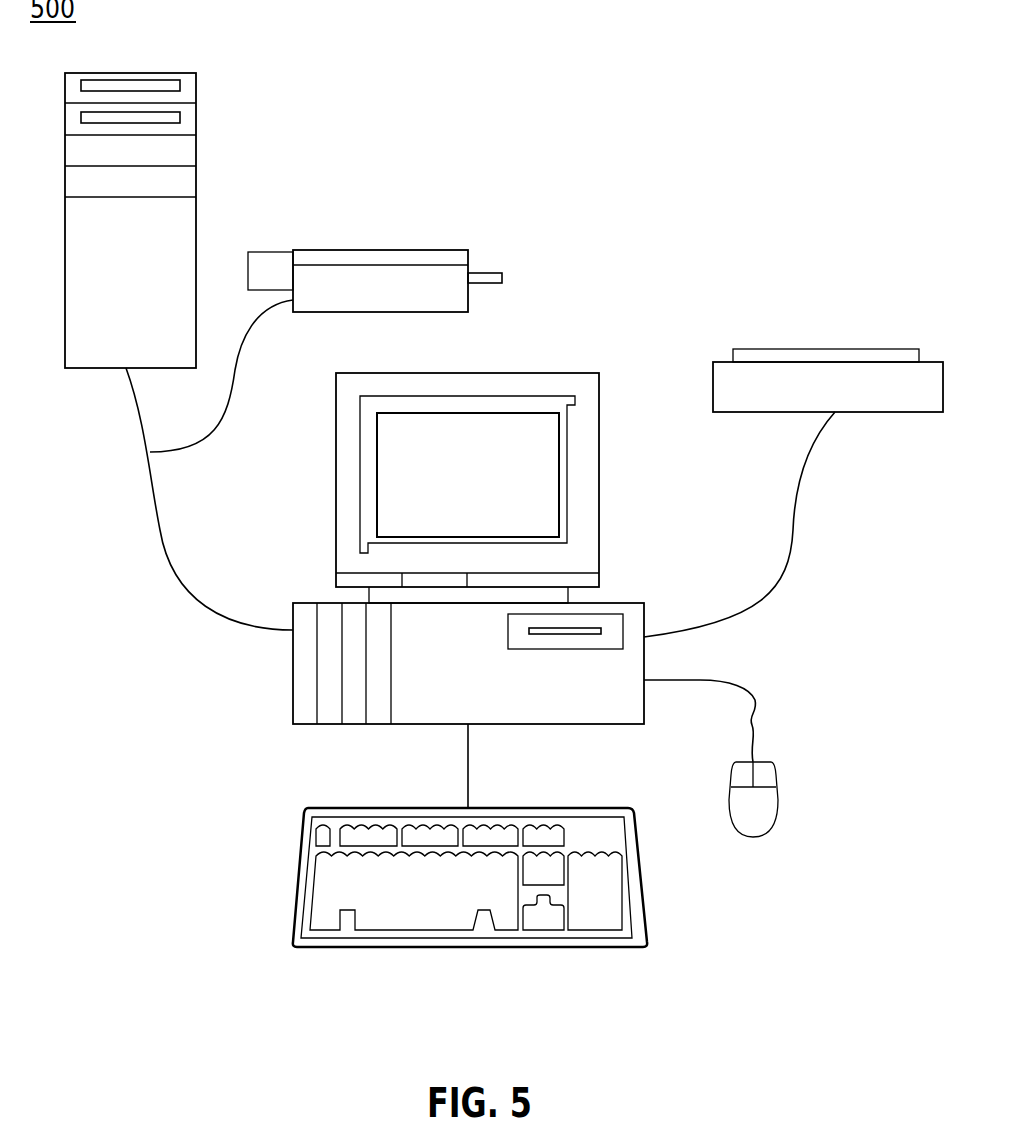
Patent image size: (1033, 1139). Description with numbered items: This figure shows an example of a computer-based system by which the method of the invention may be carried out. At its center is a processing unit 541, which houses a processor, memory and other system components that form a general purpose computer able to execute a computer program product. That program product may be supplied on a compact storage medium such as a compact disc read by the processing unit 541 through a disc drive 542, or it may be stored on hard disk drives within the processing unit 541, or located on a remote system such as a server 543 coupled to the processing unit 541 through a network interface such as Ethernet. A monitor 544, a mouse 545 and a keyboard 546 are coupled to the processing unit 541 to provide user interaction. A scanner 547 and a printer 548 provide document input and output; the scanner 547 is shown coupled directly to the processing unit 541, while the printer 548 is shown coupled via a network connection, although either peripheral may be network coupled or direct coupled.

The processing unit 541 is at (293, 677).
The disc drive 542 is at (602, 608).
The server 543 is at (196, 118).
The monitor 544 is at (599, 463).
The mouse 545 is at (775, 795).
The keyboard 546 is at (613, 943).
The scanner 547 is at (468, 258).
The printer 548 is at (769, 352).